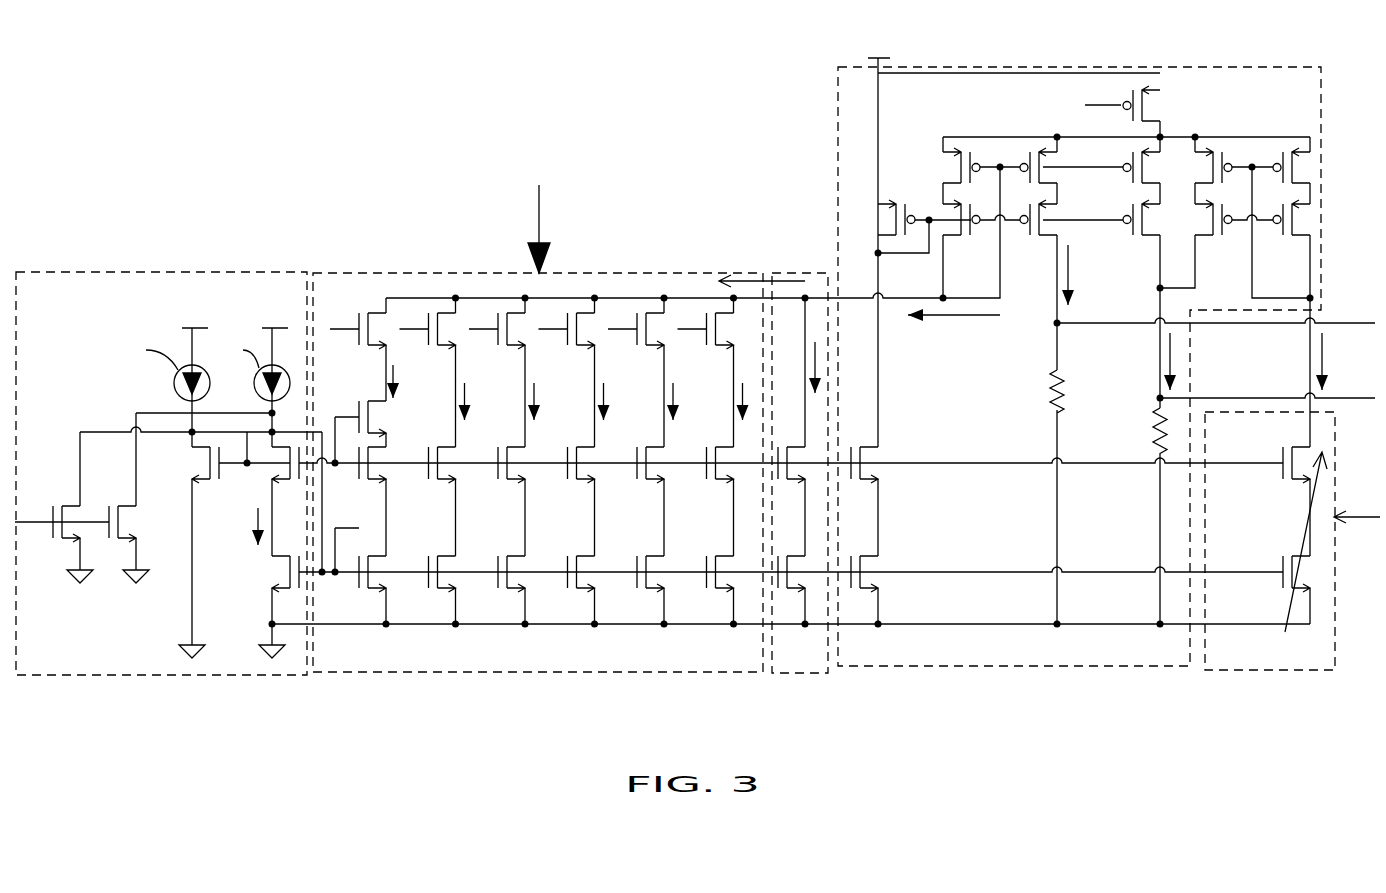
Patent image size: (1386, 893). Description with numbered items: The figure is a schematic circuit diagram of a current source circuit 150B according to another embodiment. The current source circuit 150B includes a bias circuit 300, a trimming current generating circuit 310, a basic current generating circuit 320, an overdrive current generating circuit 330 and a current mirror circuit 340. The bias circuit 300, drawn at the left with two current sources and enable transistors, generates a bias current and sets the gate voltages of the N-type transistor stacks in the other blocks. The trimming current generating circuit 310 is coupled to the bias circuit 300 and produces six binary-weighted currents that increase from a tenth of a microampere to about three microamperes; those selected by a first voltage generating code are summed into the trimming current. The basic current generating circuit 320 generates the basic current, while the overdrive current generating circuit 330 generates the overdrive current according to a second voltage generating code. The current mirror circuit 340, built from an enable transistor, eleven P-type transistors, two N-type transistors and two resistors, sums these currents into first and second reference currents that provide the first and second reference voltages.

The current source circuit 150B is at (695, 380).
The bias circuit 300 is at (160, 272).
The trimming current generating circuit 310 is at (647, 273).
The basic current generating circuit 320 is at (800, 273).
The overdrive current generating circuit 330 is at (1250, 670).
The current mirror circuit 340 is at (1253, 67).